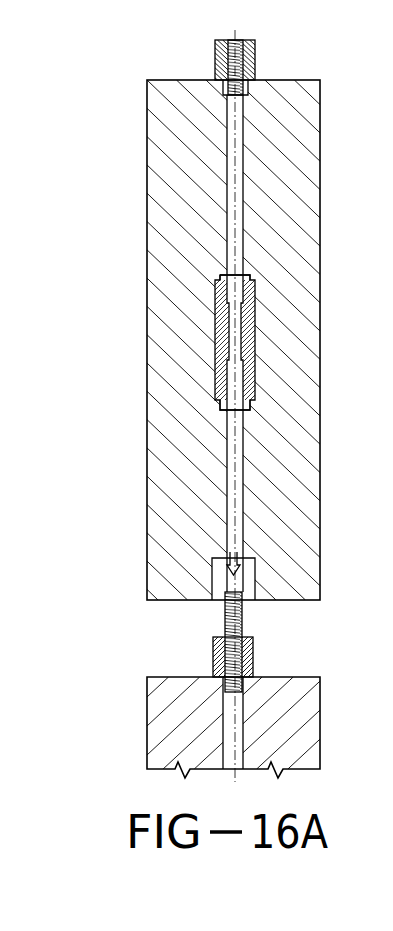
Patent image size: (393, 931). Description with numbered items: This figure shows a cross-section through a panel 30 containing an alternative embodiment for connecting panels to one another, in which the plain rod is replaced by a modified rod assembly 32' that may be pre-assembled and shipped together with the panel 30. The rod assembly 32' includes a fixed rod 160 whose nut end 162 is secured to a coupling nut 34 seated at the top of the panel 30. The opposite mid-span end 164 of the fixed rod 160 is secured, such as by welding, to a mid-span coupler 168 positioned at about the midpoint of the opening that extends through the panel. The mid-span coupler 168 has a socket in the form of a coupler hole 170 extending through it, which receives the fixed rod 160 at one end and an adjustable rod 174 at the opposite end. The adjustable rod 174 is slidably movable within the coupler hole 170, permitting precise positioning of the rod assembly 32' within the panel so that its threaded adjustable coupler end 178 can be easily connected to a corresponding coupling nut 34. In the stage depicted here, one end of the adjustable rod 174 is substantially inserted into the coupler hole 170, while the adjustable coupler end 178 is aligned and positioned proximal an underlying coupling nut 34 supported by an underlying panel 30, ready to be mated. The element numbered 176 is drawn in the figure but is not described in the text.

The panel 30 is at (143, 454).
The modified rod assembly 32' is at (266, 406).
The coupling nut 34 is at (217, 42).
The fixed rod 160 is at (238, 207).
The nut end 162 is at (226, 85).
The mid-span end 164 is at (245, 277).
The mid-span coupler 168 is at (254, 320).
The coupler hole 170 is at (237, 335).
The adjustable rod 174 is at (237, 527).
The pin 176 is at (238, 485).
The adjustable coupler end 178 is at (240, 587).